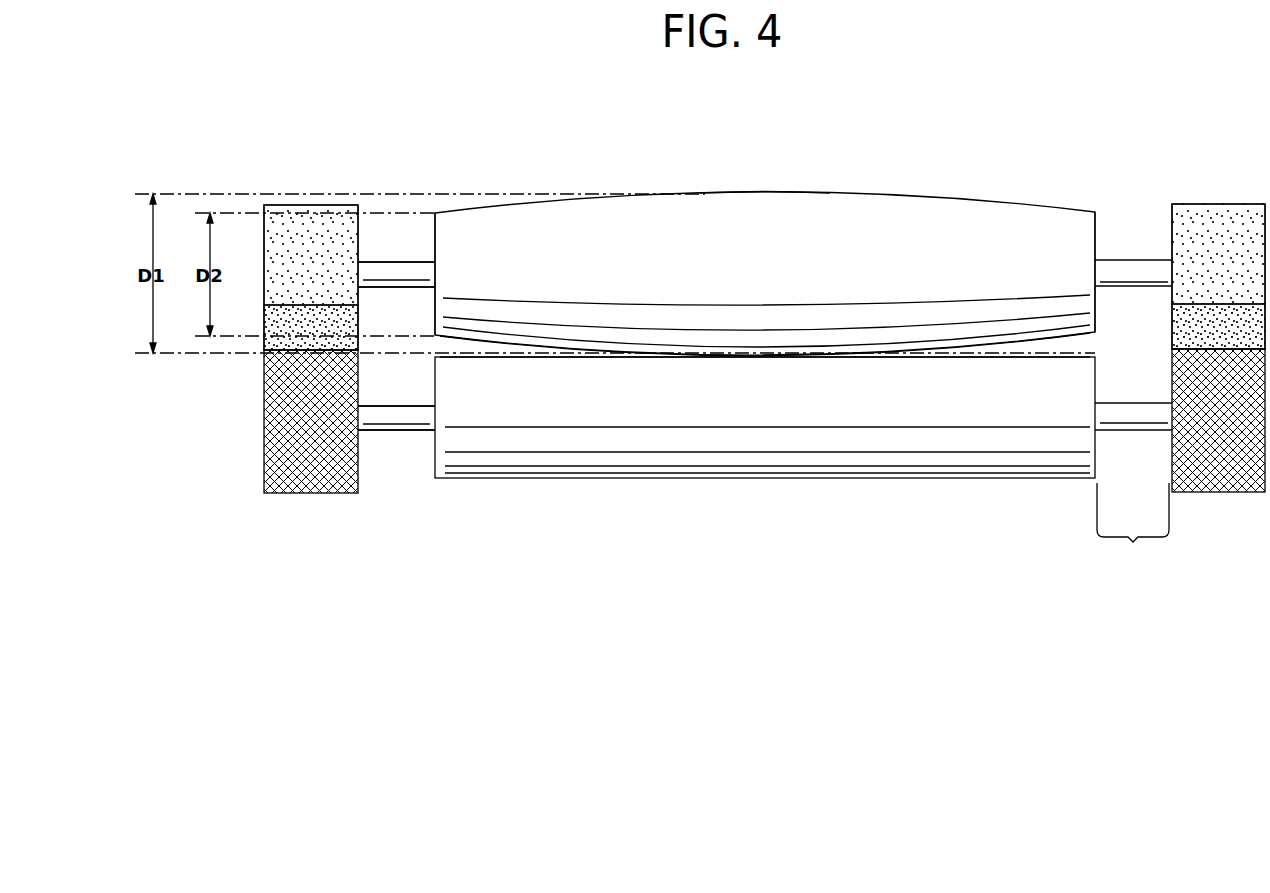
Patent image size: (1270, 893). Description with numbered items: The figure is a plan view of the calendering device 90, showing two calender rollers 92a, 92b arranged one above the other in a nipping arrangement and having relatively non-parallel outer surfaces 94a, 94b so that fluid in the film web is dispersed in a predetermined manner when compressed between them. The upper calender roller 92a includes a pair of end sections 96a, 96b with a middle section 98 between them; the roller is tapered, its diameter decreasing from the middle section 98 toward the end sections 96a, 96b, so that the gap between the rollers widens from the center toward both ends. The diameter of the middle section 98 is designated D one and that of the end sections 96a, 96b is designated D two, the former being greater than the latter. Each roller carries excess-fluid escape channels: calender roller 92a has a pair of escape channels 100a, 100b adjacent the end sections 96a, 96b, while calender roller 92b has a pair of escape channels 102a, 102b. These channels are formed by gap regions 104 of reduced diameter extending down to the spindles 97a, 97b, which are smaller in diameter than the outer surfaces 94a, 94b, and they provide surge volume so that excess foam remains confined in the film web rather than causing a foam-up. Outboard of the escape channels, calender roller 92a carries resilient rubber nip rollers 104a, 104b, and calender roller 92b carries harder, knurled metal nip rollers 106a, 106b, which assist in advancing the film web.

The calendering device 90 is at (1020, 135).
The calender roller 92a is at (733, 280).
The calender roller 92b is at (733, 410).
The outer surface 94a is at (477, 343).
The outer surface 94b is at (478, 357).
The end section 96a is at (1066, 262).
The end section 96b is at (455, 265).
The spindle 97a is at (378, 268).
The spindle 97b is at (400, 425).
The middle section 98 is at (746, 218).
The excess-fluid escape channel 100a is at (1137, 240).
The excess-fluid escape channel 100b is at (396, 244).
The excess-fluid escape channel 102a is at (1134, 472).
The excess-fluid escape channel 102b is at (387, 465).
The gap region 104 is at (1133, 524).
The nip roller 104a is at (1227, 235).
The nip roller 104b is at (305, 235).
The nip roller 106a is at (1225, 463).
The nip roller 106b is at (310, 470).